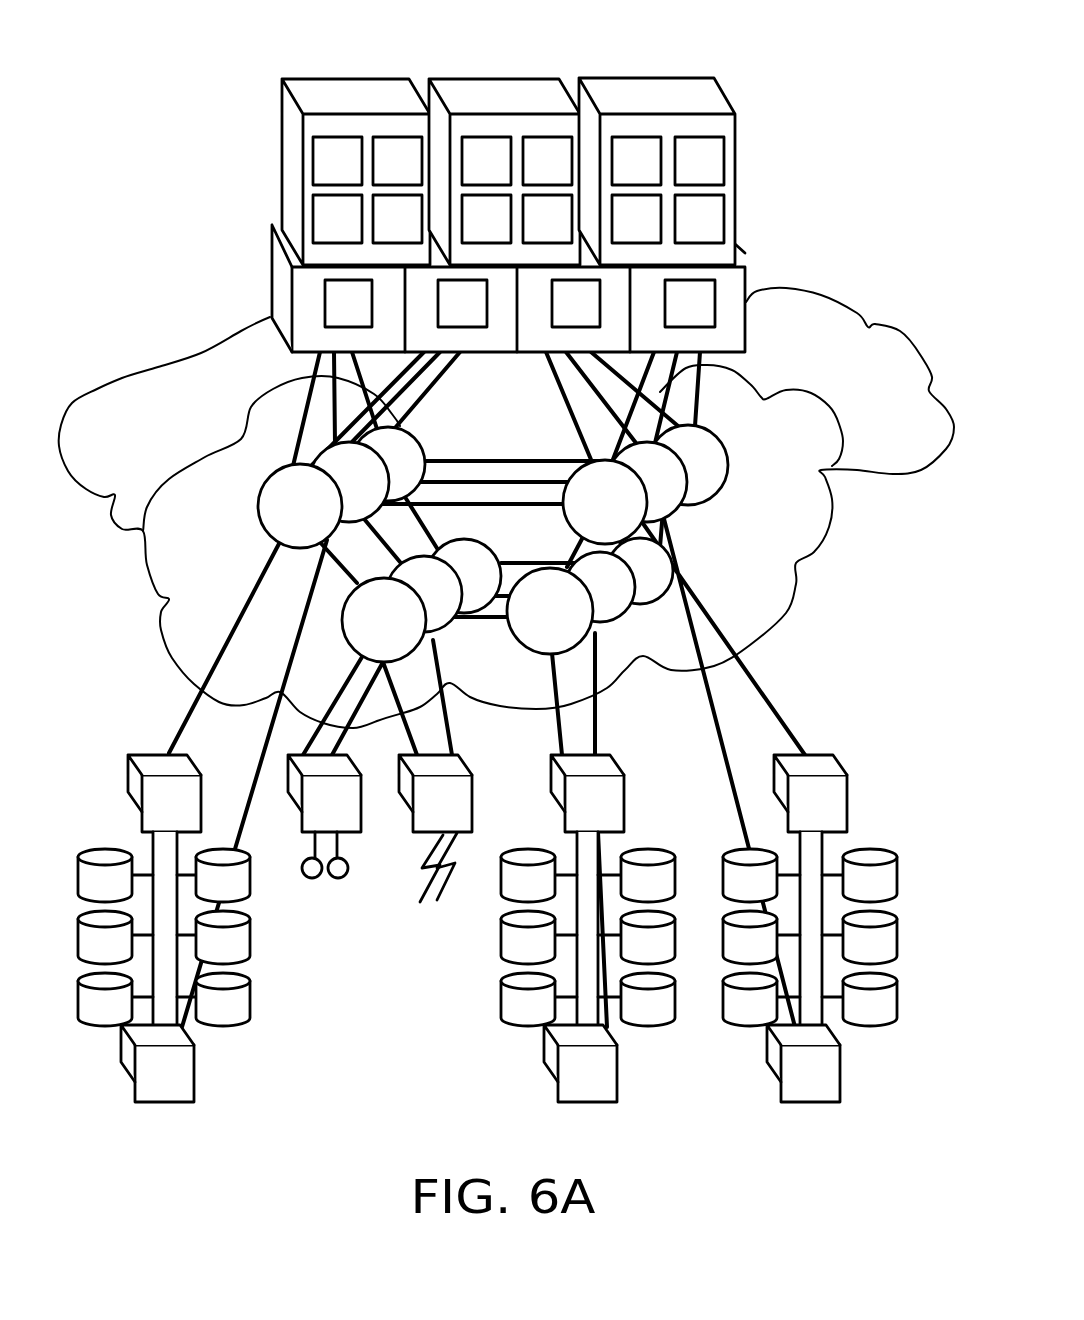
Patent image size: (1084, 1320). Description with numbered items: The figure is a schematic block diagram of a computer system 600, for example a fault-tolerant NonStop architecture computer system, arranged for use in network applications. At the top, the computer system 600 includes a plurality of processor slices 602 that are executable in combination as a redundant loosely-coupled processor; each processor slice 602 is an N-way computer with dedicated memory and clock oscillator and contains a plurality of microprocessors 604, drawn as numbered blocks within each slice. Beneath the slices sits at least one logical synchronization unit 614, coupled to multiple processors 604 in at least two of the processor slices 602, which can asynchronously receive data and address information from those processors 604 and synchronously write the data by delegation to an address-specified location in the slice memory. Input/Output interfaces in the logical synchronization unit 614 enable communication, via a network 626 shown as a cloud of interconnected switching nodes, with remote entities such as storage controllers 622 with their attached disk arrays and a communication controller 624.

The computer system 600 is at (470, 192).
The processor slice 602 is at (633, 87).
The microprocessor 604 is at (748, 204).
The logical synchronization unit 614 is at (710, 300).
The storage controller 622 is at (780, 798).
The communication controller 624 is at (473, 790).
The network 626 is at (804, 534).